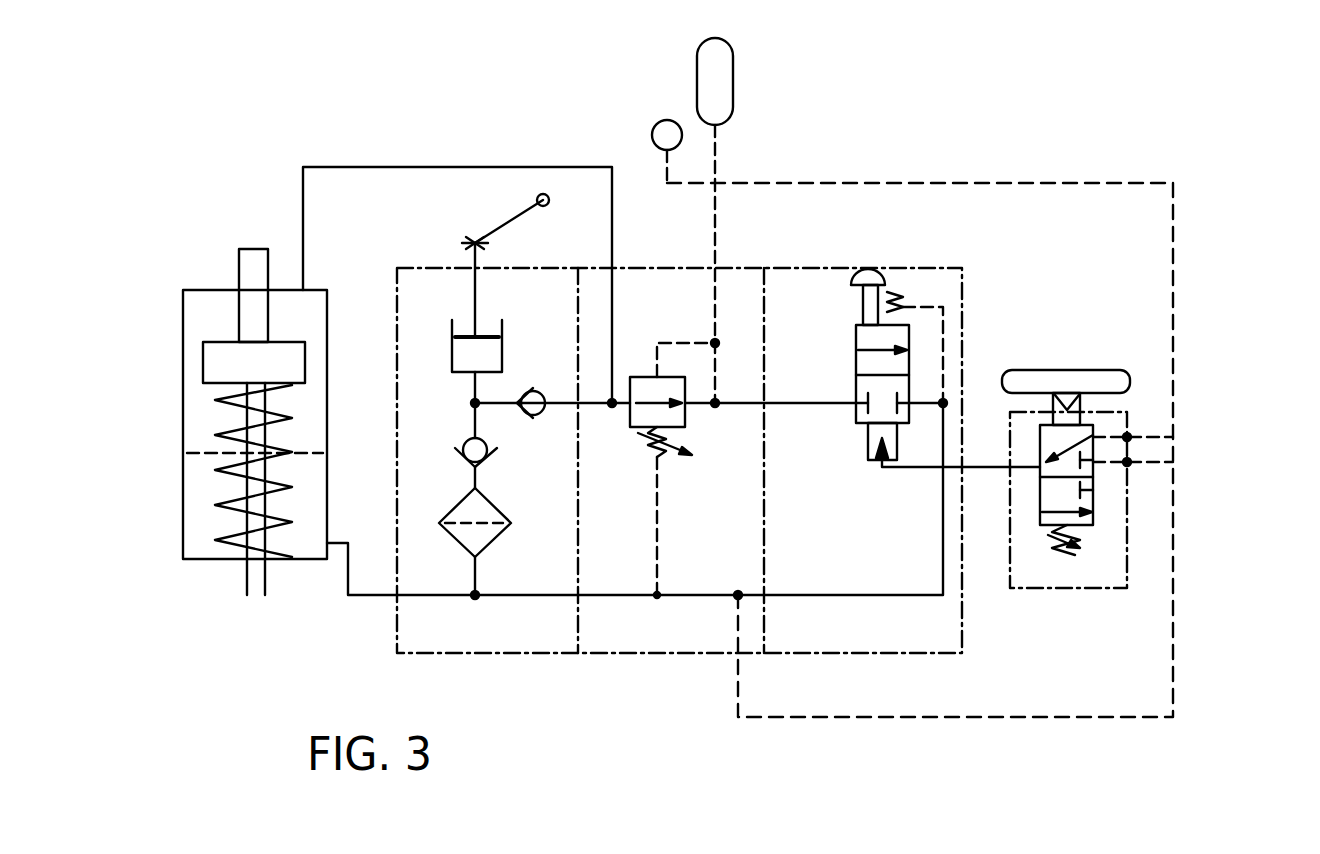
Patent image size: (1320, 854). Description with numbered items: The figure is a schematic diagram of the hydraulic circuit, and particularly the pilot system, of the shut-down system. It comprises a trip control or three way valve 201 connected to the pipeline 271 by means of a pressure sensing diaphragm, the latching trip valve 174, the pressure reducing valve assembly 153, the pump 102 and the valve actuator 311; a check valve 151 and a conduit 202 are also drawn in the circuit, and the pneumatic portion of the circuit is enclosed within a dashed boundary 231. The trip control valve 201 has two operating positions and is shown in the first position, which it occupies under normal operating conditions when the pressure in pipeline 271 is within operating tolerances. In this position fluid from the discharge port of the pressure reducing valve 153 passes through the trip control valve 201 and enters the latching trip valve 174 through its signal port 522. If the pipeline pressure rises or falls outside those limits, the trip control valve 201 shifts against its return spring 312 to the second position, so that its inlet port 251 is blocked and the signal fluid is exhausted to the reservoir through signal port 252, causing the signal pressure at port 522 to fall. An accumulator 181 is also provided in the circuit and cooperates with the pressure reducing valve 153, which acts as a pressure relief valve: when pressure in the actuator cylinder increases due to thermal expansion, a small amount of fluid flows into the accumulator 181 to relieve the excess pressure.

The valve actuator 311 is at (215, 273).
The pump 102 is at (547, 250).
The check valve 151 is at (508, 432).
The pressure reducing valve assembly 153 is at (733, 262).
The accumulator 181 is at (736, 93).
The latching trip valve 174 is at (908, 266).
The signal port 522 is at (882, 462).
The pneumatic conduit 202 is at (967, 472).
The pipeline 271 is at (1072, 368).
The trip control valve 201 is at (1142, 553).
The return spring 312 is at (1082, 556).
The inlet port 251 is at (1133, 432).
The signal port 252 is at (1133, 460).
The pneumatic circuit 231 is at (1175, 327).